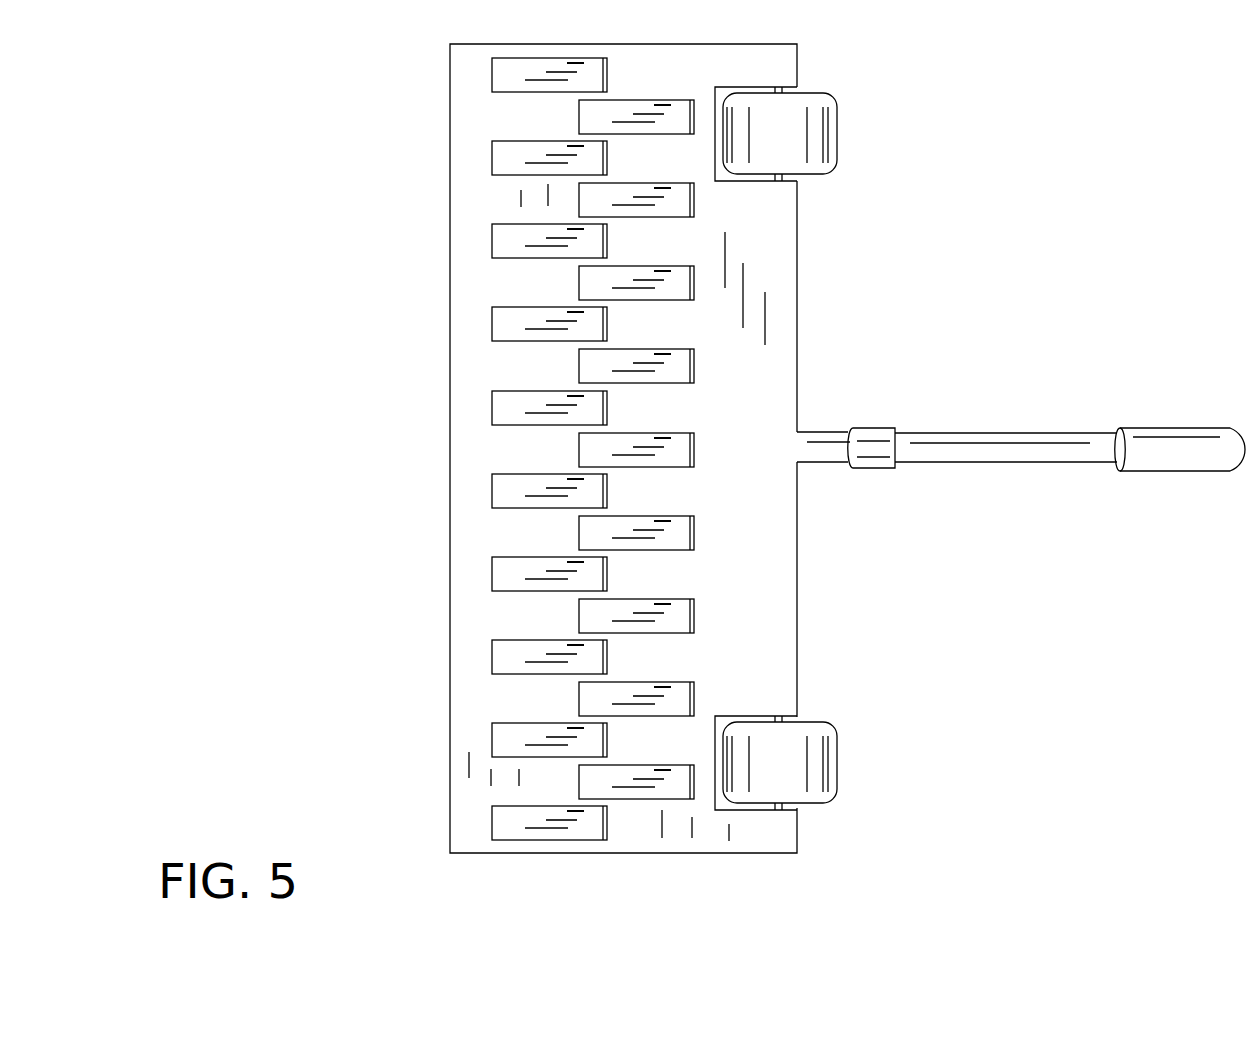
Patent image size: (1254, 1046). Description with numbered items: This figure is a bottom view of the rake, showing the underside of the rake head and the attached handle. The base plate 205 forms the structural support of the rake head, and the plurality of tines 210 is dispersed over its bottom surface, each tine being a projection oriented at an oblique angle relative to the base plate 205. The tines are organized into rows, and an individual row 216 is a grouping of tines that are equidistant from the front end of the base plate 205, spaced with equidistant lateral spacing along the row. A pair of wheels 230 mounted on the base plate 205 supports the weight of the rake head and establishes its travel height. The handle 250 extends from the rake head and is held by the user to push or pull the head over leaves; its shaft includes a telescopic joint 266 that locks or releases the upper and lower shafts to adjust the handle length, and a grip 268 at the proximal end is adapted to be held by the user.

The base plate 205 is at (780, 626).
The plurality of tines 210 is at (503, 652).
The individual row 216 is at (550, 860).
The pair of wheels 230 is at (825, 134).
The handle 250 is at (1012, 440).
The telescopic joint 266 is at (880, 447).
The grip 268 is at (1170, 463).